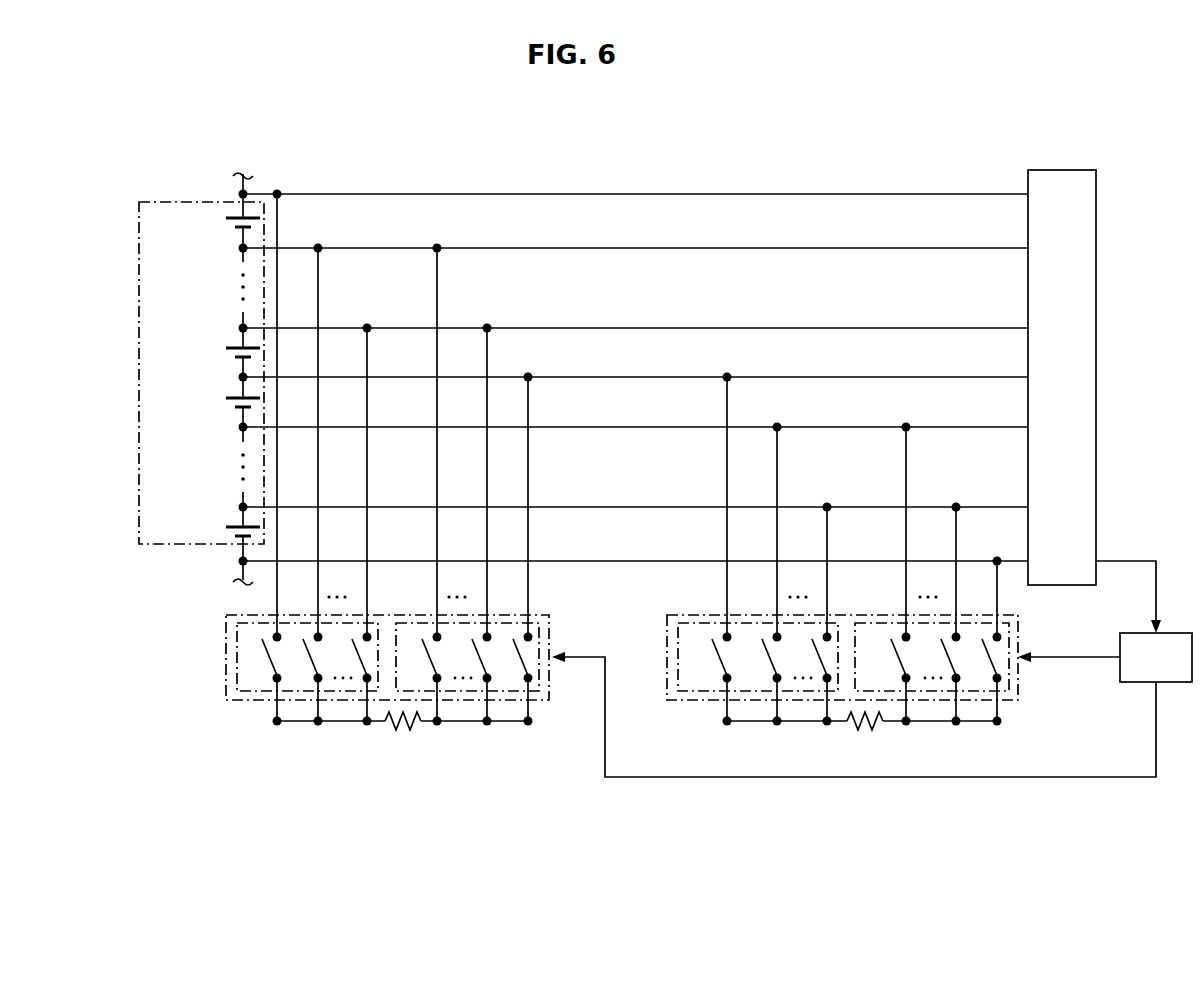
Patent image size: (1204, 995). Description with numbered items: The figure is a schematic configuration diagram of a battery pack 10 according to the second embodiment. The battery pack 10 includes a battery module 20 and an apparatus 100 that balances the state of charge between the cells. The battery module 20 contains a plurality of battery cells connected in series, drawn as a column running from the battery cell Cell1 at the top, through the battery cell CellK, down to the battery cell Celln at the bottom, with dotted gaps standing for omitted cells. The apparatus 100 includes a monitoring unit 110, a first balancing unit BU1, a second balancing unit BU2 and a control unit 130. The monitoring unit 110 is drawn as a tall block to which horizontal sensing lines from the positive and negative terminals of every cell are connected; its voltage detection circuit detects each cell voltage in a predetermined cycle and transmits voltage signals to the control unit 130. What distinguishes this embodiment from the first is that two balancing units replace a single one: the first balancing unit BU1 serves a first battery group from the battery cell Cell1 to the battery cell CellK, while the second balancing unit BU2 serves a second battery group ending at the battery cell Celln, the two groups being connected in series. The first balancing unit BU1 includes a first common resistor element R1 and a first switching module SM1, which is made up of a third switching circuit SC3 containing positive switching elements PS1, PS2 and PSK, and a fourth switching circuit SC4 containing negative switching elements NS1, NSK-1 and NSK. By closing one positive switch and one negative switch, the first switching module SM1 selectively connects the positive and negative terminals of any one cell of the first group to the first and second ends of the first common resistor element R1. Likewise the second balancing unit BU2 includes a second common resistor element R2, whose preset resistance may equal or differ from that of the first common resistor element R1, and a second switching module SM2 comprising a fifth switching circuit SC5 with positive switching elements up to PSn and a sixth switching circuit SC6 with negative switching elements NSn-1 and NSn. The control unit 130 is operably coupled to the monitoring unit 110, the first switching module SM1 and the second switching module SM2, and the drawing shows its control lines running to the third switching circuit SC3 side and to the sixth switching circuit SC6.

The battery pack 10 is at (304, 142).
The battery module 20 is at (154, 205).
The apparatus 100 is at (1142, 268).
The monitoring unit 110 is at (1070, 170).
The control unit 130 is at (1180, 631).
The battery cell Cell1 is at (228, 218).
The battery cell CellK is at (228, 348).
The battery cell Celln is at (228, 527).
The first balancing unit BU1 is at (197, 601).
The second balancing unit BU2 is at (638, 601).
The first switching module SM1 is at (226, 625).
The second switching module SM2 is at (667, 625).
The third switching circuit SC3 is at (236, 656).
The fourth switching circuit SC4 is at (541, 680).
The fifth switching circuit SC5 is at (677, 656).
The sixth switching circuit SC6 is at (1010, 680).
The positive switching element PS1 is at (261, 677).
The positive switching element PS2 is at (302, 677).
The positive switching element PSK is at (352, 677).
The negative switching element NS1 is at (421, 677).
The negative switching element NSK-1 is at (467, 677).
The negative switching element NSK is at (512, 677).
The positive switching element PSn is at (811, 677).
The negative switching element NSn-1 is at (935, 677).
The negative switching element NSn is at (982, 677).
The first common resistor element R1 is at (403, 726).
The second common resistor element R2 is at (864, 726).